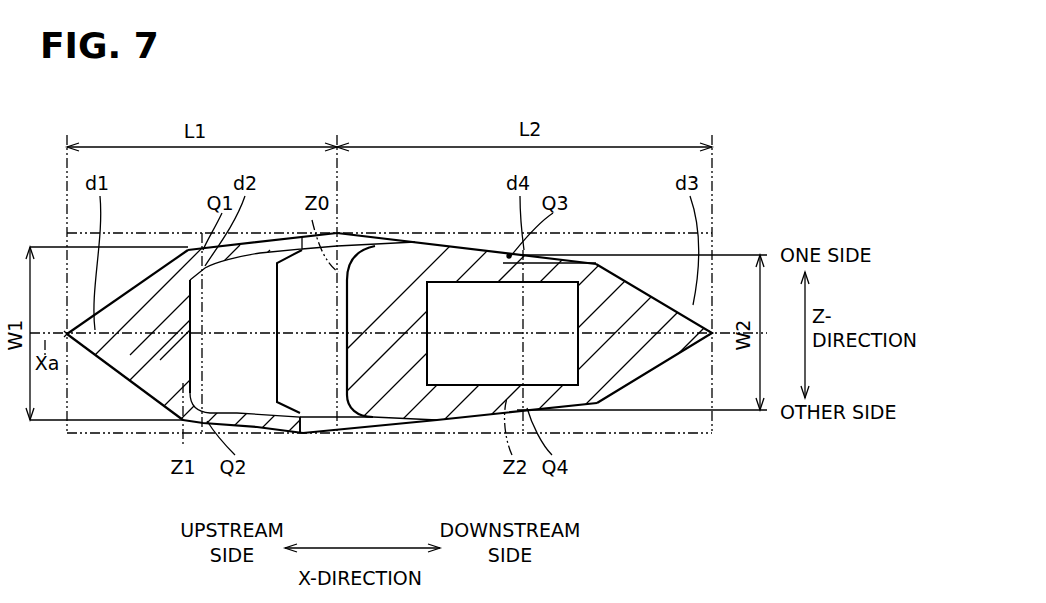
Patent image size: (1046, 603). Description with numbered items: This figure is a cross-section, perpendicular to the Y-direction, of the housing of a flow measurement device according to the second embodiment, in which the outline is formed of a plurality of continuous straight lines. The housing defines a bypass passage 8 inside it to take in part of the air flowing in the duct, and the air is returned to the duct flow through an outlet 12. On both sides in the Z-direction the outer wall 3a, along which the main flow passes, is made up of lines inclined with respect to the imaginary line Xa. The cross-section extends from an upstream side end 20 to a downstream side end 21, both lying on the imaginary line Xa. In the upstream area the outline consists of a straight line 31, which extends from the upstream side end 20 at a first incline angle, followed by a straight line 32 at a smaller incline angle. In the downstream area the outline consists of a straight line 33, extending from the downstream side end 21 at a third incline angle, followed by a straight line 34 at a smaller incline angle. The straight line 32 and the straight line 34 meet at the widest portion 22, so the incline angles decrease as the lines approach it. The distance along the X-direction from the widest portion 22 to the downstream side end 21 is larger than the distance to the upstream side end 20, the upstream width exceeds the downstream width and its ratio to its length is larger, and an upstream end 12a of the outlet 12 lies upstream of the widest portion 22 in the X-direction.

The bypass passage 8 is at (220, 287).
The outlet 12 is at (318, 433).
The upstream end of the outlet 12a is at (299, 429).
The upstream side end 20 is at (67, 334).
The downstream side end 21 is at (712, 333).
The widest portion 22 is at (340, 235).
The straight line 31 is at (118, 298).
The straight line 32 is at (265, 245).
The straight line 33 is at (690, 327).
The straight line 34 is at (500, 262).
The outer wall 3a is at (428, 243).